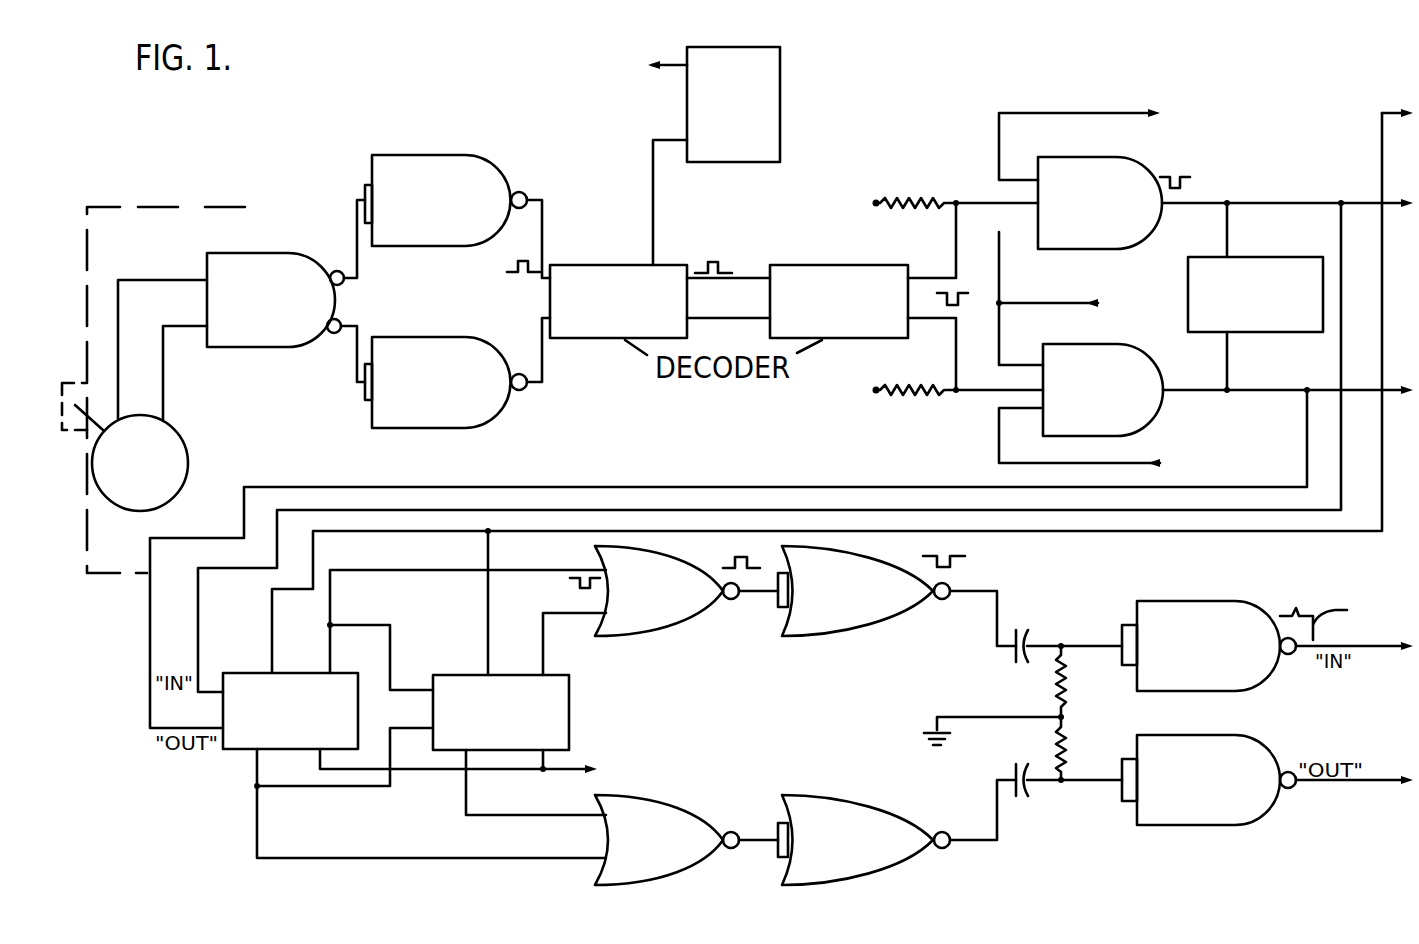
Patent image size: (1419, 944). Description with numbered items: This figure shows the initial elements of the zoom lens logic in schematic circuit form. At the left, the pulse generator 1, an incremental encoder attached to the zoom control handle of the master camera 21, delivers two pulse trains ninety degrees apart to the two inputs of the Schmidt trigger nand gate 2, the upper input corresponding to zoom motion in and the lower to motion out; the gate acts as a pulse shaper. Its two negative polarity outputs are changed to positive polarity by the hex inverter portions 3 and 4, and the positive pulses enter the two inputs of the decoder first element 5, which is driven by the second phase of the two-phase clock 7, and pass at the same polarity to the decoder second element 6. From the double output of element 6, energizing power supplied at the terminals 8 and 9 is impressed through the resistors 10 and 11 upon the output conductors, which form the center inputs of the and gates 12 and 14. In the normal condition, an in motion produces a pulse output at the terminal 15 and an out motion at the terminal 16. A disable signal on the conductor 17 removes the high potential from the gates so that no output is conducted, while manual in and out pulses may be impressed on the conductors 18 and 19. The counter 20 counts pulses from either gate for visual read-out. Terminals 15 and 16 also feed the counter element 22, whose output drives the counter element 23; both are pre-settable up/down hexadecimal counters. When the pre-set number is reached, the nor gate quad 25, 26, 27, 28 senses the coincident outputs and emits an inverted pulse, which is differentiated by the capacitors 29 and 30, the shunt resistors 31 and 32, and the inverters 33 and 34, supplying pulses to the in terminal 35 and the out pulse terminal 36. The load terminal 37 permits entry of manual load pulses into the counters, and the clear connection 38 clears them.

The pulse generator 1 is at (172, 434).
The Schmidt trigger nand gate 2 is at (252, 258).
The hex inverter portion 3 is at (423, 156).
The hex inverter portion 4 is at (427, 338).
The decoder first element 5 is at (580, 267).
The decoder second element 6 is at (828, 267).
The two-phase clock 7 is at (788, 82).
The terminal 8 is at (876, 202).
The terminal 9 is at (876, 389).
The resistor 10 is at (916, 187).
The resistor 11 is at (916, 373).
The and gate 12 is at (1127, 163).
The and gate 14 is at (1148, 344).
The in output terminal 15 is at (1401, 207).
The out output terminal 16 is at (1401, 394).
The disable conductor 17 is at (1022, 302).
The manual in conductor 18 is at (1062, 113).
The manual out conductor 19 is at (1138, 463).
The counter 20 is at (1272, 258).
The master camera 21 is at (118, 205).
The counter element 22 is at (245, 669).
The counter element 23 is at (460, 669).
The nor gate of quad 25 is at (688, 622).
The nor gate of quad 26 is at (705, 817).
The inverter of quad 27 is at (905, 622).
The inverter of quad 28 is at (916, 818).
The capacitor 29 is at (1028, 638).
The capacitor 30 is at (1028, 787).
The shunt resistor 31 is at (1075, 681).
The shunt resistor 32 is at (1078, 748).
The inverter 33 is at (1263, 601).
The inverter 34 is at (1260, 756).
The in terminal 35 is at (1399, 653).
The out pulse terminal 36 is at (1399, 786).
The load terminal 37 is at (1401, 117).
The clear connection 38 is at (465, 753).